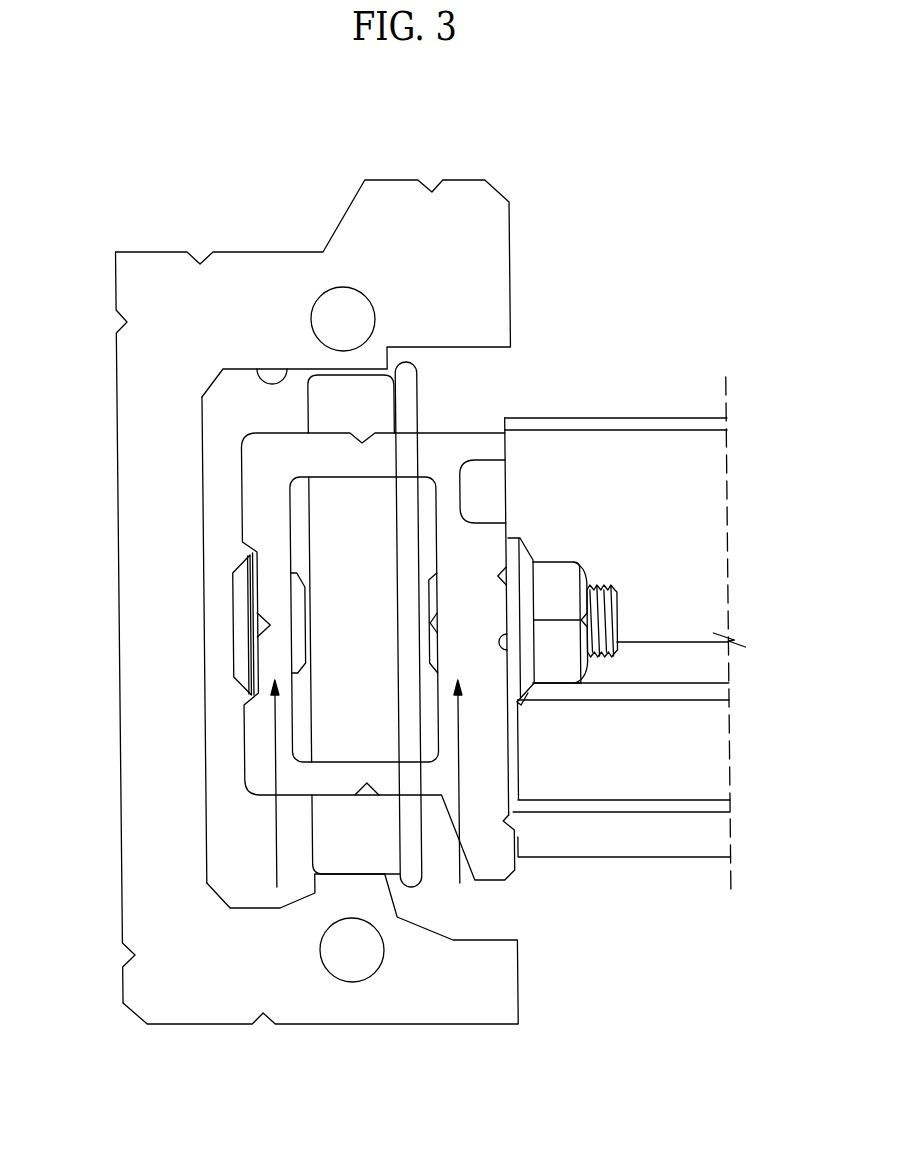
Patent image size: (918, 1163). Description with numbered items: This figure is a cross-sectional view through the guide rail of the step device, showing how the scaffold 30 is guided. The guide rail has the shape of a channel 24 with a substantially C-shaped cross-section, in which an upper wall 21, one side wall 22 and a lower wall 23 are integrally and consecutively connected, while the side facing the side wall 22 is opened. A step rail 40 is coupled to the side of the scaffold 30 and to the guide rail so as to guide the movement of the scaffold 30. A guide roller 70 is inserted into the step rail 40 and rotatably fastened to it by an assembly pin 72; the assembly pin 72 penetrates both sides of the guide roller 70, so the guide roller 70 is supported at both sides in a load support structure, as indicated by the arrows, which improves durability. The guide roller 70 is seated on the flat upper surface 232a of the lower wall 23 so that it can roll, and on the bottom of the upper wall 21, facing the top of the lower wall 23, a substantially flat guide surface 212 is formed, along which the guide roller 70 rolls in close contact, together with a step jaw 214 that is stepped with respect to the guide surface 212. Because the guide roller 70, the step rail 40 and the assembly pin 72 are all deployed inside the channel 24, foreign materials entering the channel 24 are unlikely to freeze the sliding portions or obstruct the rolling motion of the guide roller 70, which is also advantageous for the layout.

The upper wall 21 is at (233, 252).
The guide surface 212 is at (283, 367).
The step jaw 214 is at (385, 358).
The side wall 22 is at (113, 636).
The lower wall 23 is at (387, 1024).
The flat upper surface 232a is at (342, 874).
The channel 24 is at (446, 384).
The scaffold 30 is at (656, 440).
The step rail 40 is at (478, 418).
The guide roller 70 is at (348, 393).
The assembly pin 72 is at (234, 595).